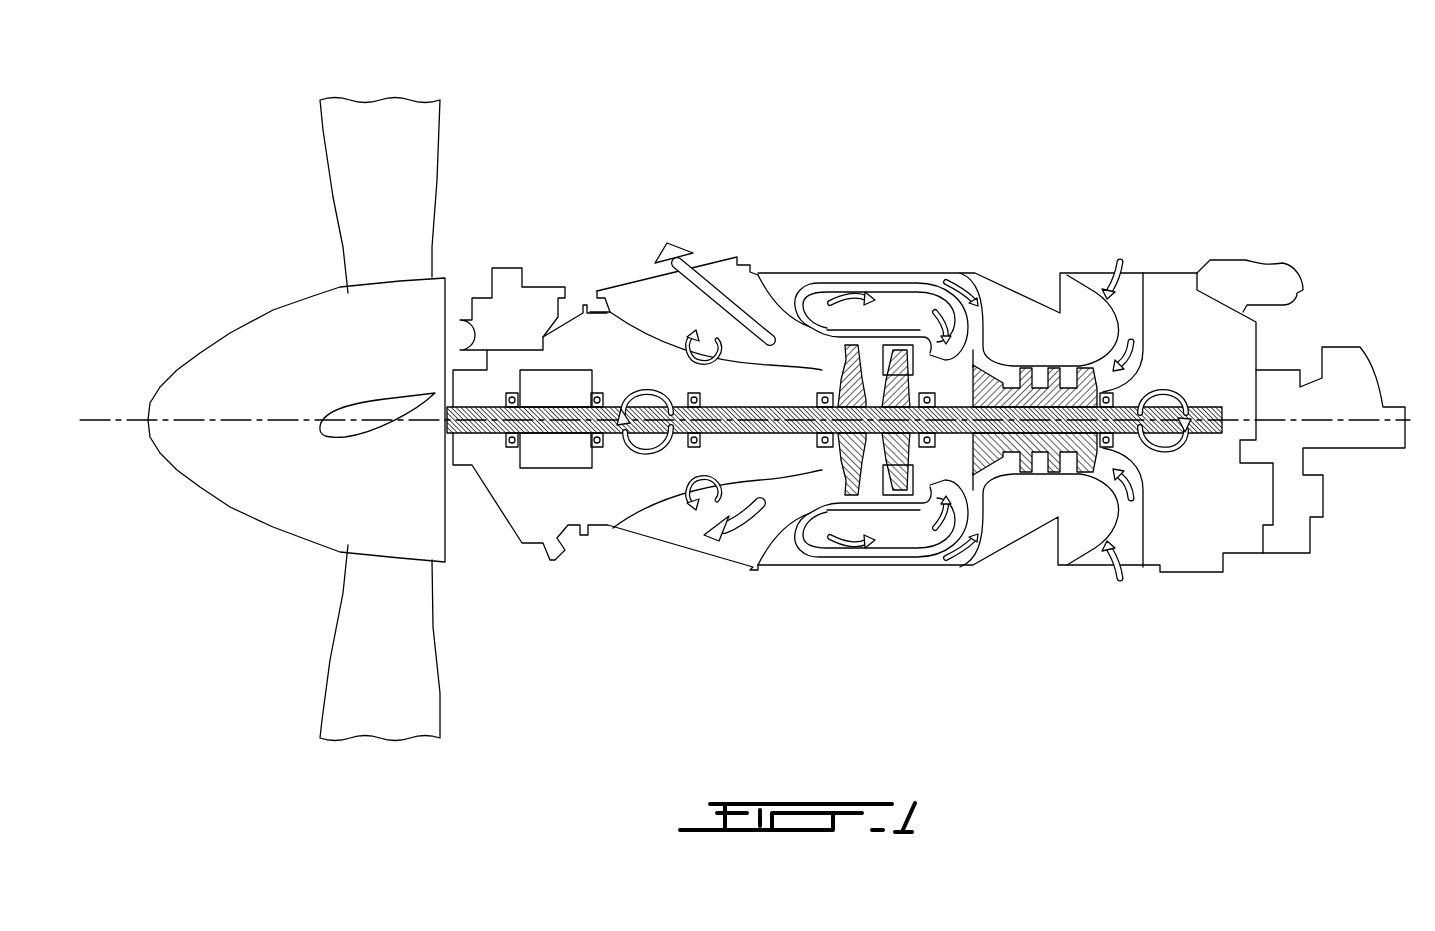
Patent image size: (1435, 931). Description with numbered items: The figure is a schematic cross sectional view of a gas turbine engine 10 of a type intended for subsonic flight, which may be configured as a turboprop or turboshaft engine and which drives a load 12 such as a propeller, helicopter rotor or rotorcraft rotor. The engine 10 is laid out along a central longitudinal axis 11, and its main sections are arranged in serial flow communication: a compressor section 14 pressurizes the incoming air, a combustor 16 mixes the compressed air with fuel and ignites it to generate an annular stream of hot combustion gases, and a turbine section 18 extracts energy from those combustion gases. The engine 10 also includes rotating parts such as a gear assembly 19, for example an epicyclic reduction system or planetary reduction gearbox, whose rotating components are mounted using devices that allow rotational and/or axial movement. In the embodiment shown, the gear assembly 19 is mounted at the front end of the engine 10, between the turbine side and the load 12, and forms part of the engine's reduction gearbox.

The gas turbine engine 10 is at (1088, 152).
The central longitudinal axis 11 is at (115, 418).
The load 12 is at (350, 687).
The compressor section 14 is at (1074, 308).
The combustor 16 is at (892, 303).
The turbine section 18 is at (873, 335).
The gear assembly 19 is at (570, 370).